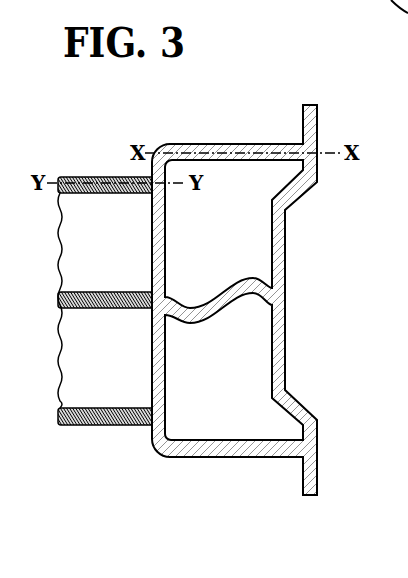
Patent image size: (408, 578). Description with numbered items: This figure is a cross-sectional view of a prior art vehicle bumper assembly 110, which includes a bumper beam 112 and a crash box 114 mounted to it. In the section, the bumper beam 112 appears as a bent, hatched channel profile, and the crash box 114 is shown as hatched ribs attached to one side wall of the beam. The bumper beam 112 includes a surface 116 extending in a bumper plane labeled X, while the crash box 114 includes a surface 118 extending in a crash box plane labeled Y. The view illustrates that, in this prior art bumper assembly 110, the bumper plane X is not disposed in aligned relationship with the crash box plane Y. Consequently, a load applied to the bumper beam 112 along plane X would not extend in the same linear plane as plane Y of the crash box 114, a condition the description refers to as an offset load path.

The vehicle bumper assembly 110 is at (222, 498).
The bumper beam 112 is at (317, 122).
The crash box 114 is at (115, 427).
The surface 116 is at (227, 144).
The surface 118 is at (93, 176).